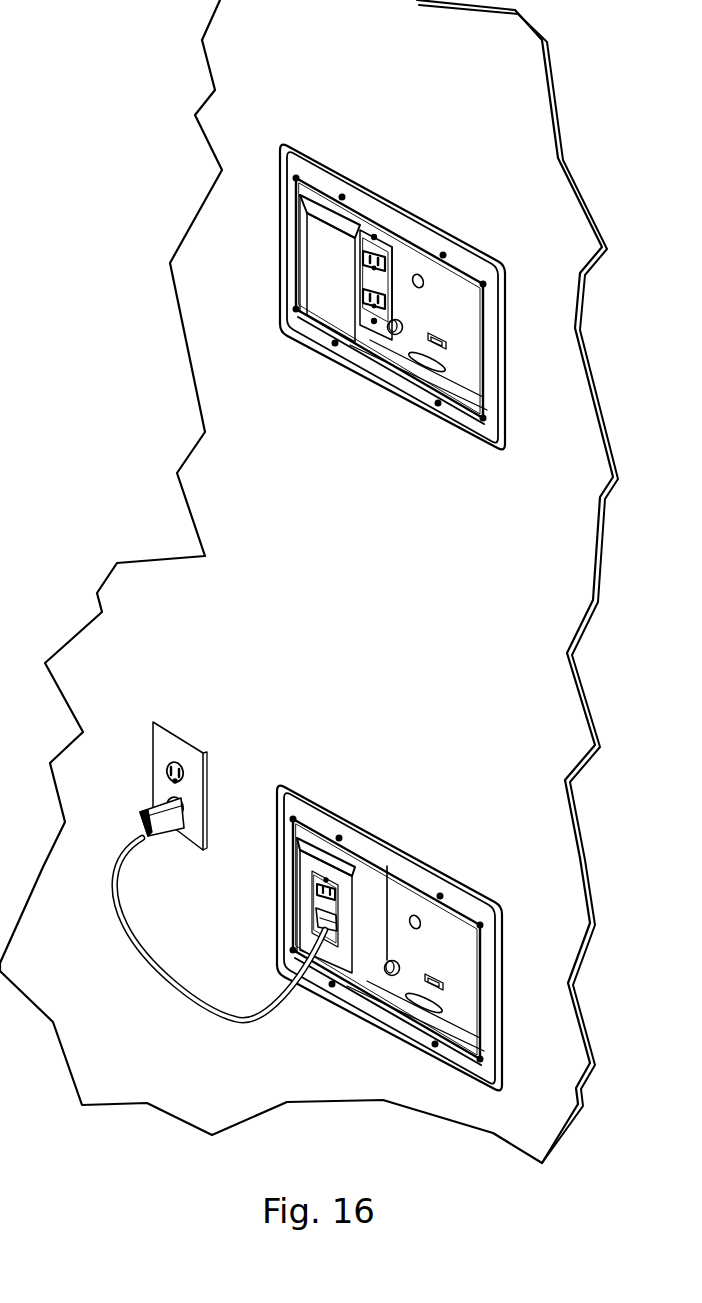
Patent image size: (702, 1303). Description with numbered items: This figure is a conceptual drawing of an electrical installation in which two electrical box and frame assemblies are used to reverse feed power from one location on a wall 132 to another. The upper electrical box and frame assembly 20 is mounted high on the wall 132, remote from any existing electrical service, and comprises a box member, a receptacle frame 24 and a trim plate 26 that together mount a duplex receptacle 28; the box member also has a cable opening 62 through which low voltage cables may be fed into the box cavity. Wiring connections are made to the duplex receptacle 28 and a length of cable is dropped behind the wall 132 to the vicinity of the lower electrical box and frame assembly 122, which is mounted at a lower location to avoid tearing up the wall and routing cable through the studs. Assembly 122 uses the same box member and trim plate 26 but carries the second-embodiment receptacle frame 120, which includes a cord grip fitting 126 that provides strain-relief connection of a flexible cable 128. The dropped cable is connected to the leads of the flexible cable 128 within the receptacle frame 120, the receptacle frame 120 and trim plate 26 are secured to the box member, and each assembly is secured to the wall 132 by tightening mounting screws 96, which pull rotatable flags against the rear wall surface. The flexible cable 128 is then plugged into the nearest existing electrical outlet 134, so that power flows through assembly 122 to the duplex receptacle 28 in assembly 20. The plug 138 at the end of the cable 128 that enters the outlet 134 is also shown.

The electrical box and frame assembly 20 is at (476, 250).
The receptacle frame 24 is at (340, 287).
The trim plate 26 is at (491, 355).
The duplex receptacle 28 is at (380, 272).
The cable opening 62 is at (428, 365).
The mounting fasteners 96 is at (344, 194).
The receptacle frame 120 is at (371, 878).
The electrical box and frame assembly 122 is at (434, 866).
The cord grip fitting 126 is at (313, 909).
The flexible cable 128 is at (153, 966).
The wall 132 is at (378, 601).
The existing electrical outlet 134 is at (181, 770).
The plug 138 is at (147, 832).